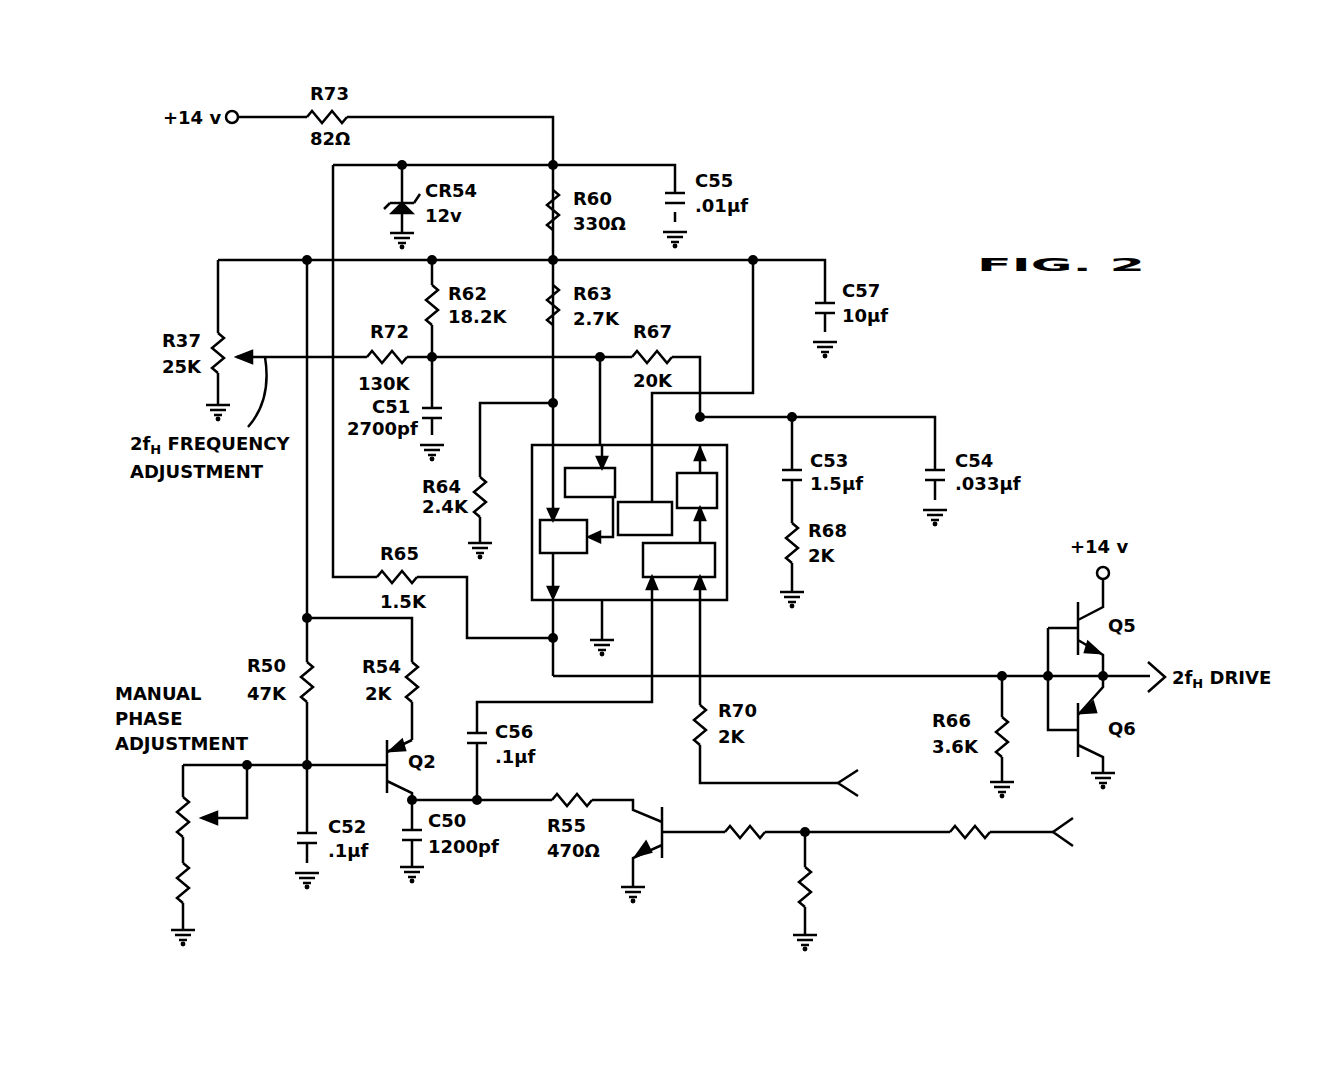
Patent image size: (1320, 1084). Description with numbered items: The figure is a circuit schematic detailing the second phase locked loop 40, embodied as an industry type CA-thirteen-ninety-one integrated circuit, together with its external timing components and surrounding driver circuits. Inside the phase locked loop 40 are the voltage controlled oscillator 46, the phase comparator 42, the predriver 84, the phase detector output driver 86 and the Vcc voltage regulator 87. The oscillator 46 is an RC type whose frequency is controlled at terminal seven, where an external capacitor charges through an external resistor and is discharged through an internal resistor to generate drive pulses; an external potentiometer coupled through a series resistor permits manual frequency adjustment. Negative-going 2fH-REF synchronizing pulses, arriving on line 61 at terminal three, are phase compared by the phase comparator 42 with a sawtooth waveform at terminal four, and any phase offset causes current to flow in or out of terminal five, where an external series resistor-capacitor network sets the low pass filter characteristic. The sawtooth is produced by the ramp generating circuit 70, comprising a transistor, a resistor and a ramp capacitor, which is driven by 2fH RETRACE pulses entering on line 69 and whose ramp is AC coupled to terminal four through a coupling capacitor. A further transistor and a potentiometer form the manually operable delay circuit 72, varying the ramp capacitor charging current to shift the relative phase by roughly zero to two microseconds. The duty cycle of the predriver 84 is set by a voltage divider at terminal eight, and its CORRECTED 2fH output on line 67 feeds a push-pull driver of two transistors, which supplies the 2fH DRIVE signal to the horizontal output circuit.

The second phase locked loop 40 is at (651, 527).
The phase comparator 42 is at (642, 548).
The voltage controlled oscillator 46 is at (617, 490).
The predriver 84 is at (563, 536).
The phase detector output driver 86 is at (697, 490).
The Vcc voltage regulator 87 is at (645, 518).
The 2fH-REF signal input line 61 is at (763, 783).
The CORRECTED 2fH output line 67 is at (912, 675).
The 2fH RETRACE pulse input line 69 is at (1020, 833).
The ramp generating circuit 70 is at (805, 866).
The manually operable delay circuit 72 is at (180, 855).